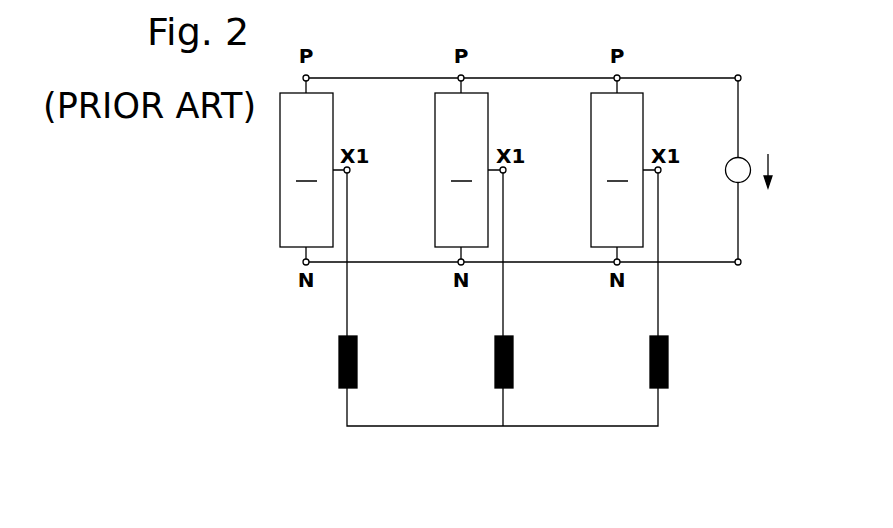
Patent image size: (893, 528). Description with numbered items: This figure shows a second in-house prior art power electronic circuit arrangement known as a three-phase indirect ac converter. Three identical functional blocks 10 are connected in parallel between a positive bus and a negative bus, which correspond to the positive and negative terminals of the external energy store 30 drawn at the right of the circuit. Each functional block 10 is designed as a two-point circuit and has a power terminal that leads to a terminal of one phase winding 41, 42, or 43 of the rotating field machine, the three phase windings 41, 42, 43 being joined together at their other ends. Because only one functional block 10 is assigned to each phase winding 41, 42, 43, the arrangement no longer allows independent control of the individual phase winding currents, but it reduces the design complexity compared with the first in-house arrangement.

The functional block 10 is at (470, 170).
The external energy store 30 is at (742, 180).
The phase winding 41 is at (365, 362).
The phase winding 42 is at (521, 362).
The phase winding 43 is at (676, 362).